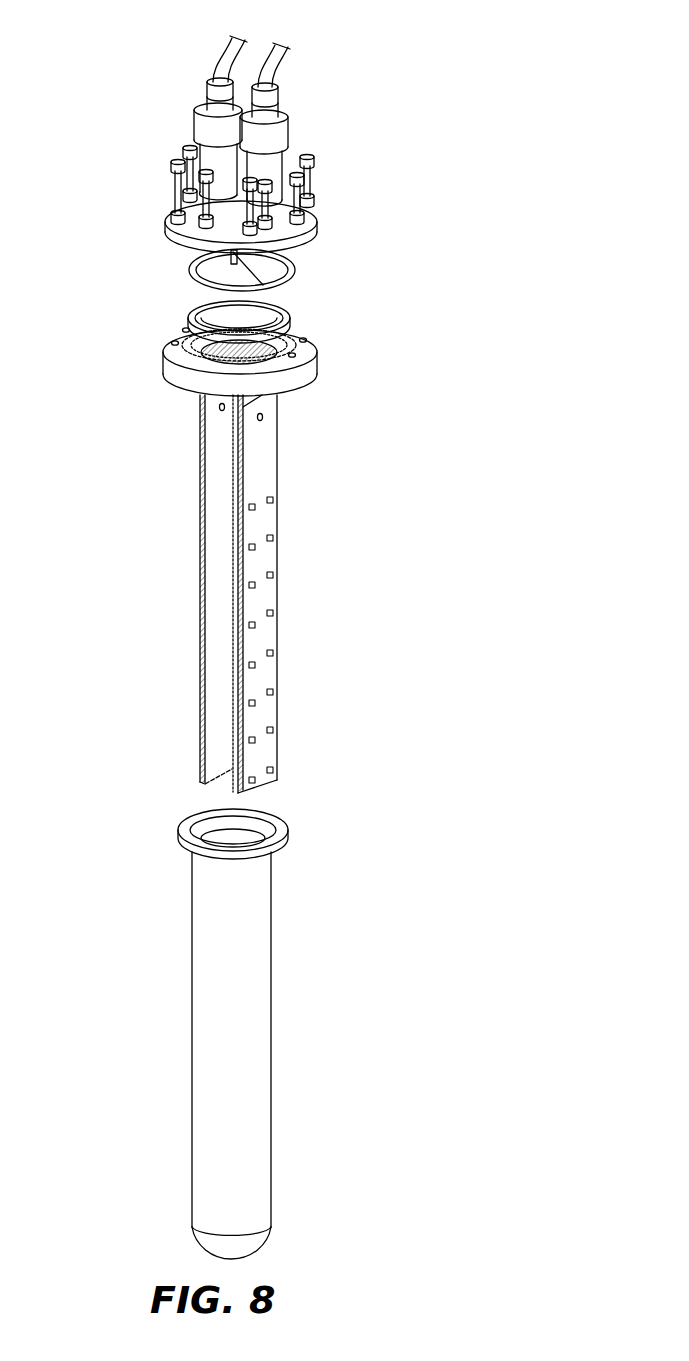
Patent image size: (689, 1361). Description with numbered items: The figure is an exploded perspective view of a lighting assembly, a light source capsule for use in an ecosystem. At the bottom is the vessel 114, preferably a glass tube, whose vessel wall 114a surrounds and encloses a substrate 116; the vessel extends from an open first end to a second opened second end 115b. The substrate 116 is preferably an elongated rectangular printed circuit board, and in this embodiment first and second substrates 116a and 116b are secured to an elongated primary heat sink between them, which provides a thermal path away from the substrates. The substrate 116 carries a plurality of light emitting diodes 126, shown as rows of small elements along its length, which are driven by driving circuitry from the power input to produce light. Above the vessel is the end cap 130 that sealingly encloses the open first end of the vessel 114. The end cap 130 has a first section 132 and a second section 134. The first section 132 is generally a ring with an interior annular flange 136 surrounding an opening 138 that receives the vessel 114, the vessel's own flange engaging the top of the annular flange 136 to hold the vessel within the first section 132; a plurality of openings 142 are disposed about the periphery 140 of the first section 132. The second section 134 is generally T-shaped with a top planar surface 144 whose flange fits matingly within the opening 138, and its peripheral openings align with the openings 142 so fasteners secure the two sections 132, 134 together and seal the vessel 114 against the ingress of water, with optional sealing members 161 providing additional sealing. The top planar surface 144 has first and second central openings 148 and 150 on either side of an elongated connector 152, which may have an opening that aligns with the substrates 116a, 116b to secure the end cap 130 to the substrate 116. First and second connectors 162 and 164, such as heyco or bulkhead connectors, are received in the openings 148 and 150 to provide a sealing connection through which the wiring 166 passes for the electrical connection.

The vessel 114 is at (192, 975).
The vessel wall 114a is at (200, 1085).
The second end 115b is at (207, 813).
The substrate 116 is at (275, 478).
The first substrate 116a is at (275, 450).
The second substrate 116b is at (225, 442).
The light emitting diodes 126 is at (273, 573).
The end cap 130 is at (137, 172).
The first section 132 is at (252, 363).
The second section 134 is at (315, 217).
The annular flange 136 is at (300, 327).
The opening 138 is at (243, 403).
The periphery 140 is at (183, 328).
The openings 142 is at (303, 334).
The top planar surface 144 is at (313, 198).
The first central opening 148 is at (218, 193).
The second central opening 150 is at (300, 157).
The elongated connector 152 is at (263, 285).
The sealing members 161 is at (293, 270).
The first connector 162 is at (287, 120).
The second connector 164 is at (207, 78).
The wiring 166 is at (213, 62).